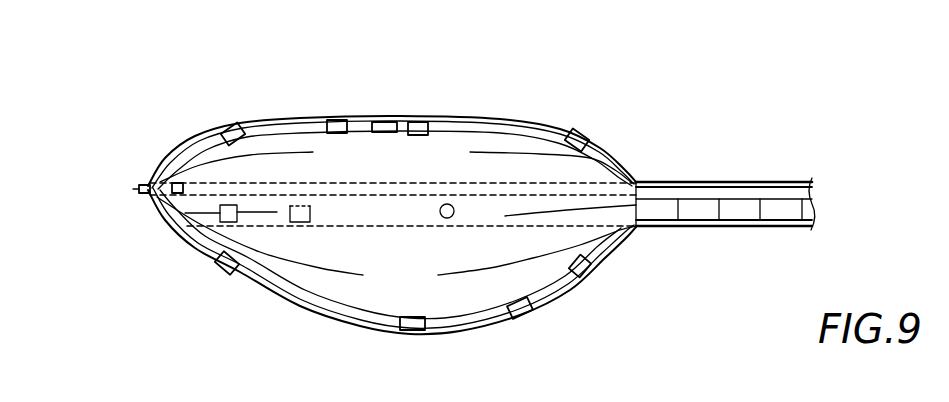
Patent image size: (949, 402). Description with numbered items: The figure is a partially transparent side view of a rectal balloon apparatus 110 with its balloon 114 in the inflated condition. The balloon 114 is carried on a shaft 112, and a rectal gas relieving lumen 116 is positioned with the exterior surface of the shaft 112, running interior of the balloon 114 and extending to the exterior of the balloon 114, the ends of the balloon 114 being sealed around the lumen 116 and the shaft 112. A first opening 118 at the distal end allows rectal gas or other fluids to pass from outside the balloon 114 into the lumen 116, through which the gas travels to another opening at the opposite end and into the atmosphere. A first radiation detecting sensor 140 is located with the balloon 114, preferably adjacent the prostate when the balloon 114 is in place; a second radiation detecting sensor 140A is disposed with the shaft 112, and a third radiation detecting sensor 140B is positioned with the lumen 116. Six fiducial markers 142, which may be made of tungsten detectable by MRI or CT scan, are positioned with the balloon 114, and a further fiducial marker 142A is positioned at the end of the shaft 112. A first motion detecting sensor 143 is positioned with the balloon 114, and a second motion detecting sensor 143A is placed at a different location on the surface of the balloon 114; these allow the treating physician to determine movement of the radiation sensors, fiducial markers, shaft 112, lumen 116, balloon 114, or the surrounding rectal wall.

The rectal balloon apparatus 110 is at (655, 126).
The shaft 112 is at (718, 228).
The balloon 114 is at (553, 120).
The rectal gas relieving lumen 116 is at (385, 183).
The first opening 118 is at (140, 184).
The first radiation detecting sensor 140 is at (390, 122).
The second radiation detecting sensor 140A is at (290, 224).
The third radiation detecting sensor 140B is at (183, 178).
The fiducial markers 142 is at (235, 122).
The fiducial marker 142A is at (180, 218).
The first motion detecting sensor 143 is at (333, 120).
The second motion detecting sensor 143A is at (520, 315).